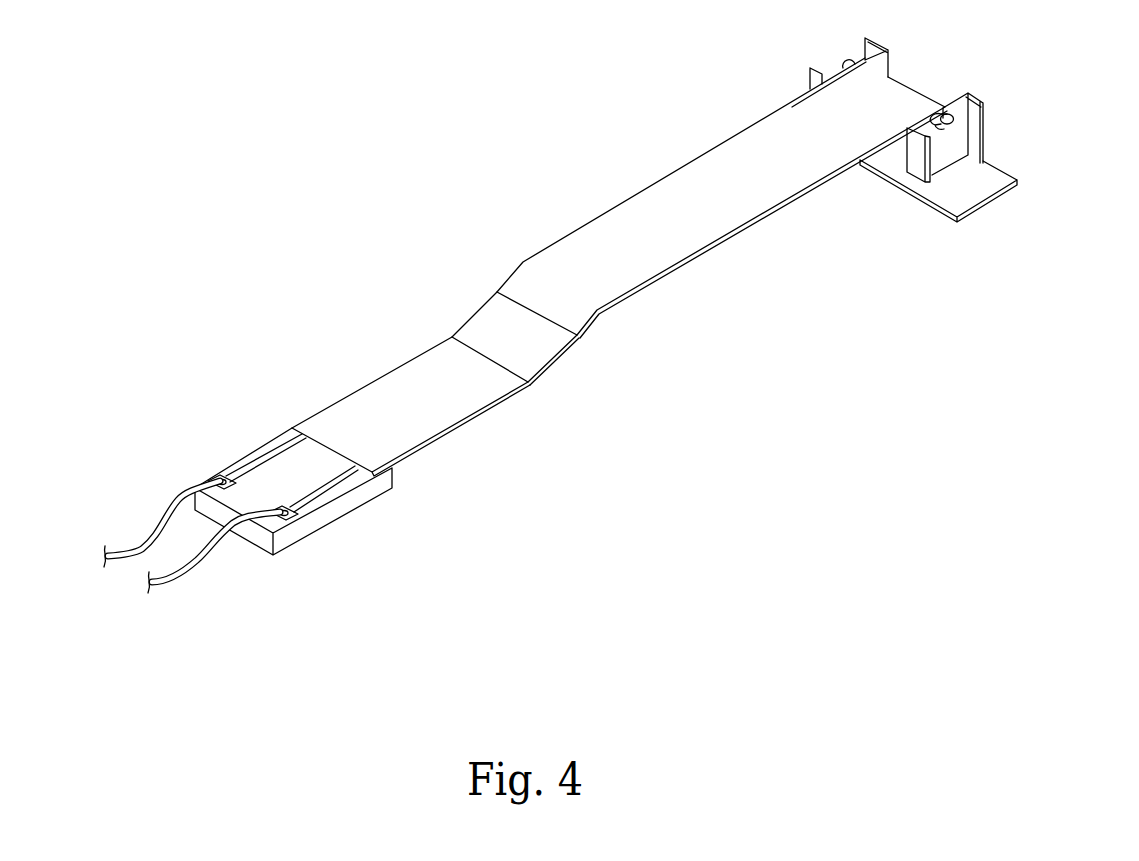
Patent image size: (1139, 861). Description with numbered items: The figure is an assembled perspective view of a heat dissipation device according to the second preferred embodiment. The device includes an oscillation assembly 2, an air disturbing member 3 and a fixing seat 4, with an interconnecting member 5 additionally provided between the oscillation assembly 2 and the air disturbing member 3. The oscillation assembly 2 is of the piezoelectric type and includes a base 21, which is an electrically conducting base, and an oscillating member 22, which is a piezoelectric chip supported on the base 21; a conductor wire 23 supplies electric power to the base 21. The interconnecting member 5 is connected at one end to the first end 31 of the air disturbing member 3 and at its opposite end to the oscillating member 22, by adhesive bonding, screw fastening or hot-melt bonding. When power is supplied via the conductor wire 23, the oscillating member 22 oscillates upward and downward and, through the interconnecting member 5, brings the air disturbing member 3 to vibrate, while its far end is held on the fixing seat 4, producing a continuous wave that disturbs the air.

The oscillation assembly 2 is at (219, 393).
The base 21 is at (262, 455).
The oscillating member 22 is at (365, 410).
The conductor wire 23 is at (140, 547).
The air disturbing member 3 is at (588, 248).
The first end 31 is at (577, 312).
The interconnecting member 5 is at (493, 330).
The fixing seat 4 is at (972, 190).